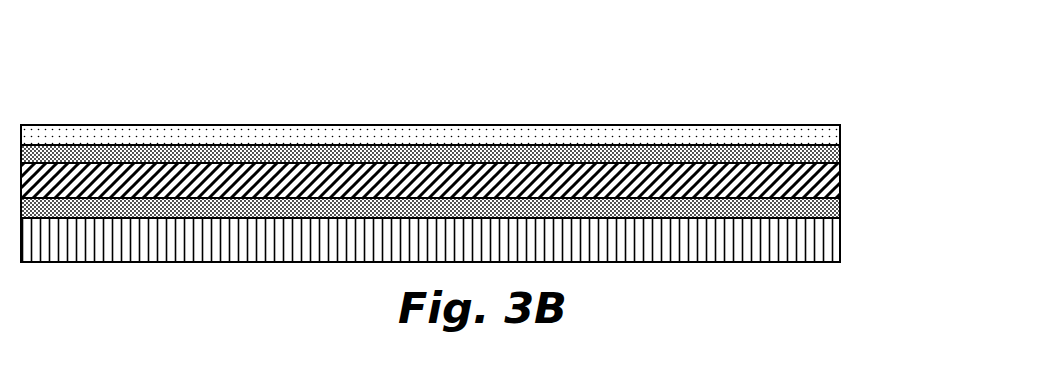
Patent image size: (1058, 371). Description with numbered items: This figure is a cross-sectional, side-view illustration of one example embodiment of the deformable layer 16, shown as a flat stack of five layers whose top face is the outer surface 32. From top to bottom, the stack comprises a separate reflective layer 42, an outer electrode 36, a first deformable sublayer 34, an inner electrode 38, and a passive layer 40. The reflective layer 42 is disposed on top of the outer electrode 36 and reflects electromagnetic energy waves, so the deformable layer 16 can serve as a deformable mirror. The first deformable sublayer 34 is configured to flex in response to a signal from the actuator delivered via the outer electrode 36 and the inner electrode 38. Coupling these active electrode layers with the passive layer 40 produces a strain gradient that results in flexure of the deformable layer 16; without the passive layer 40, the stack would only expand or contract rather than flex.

The deformable layer 16 is at (108, 84).
The outer surface 32 is at (708, 120).
The reflective layer 42 is at (825, 125).
The outer electrode 36 is at (840, 156).
The first deformable sublayer 34 is at (840, 186).
The inner electrode 38 is at (840, 209).
The passive layer 40 is at (840, 254).